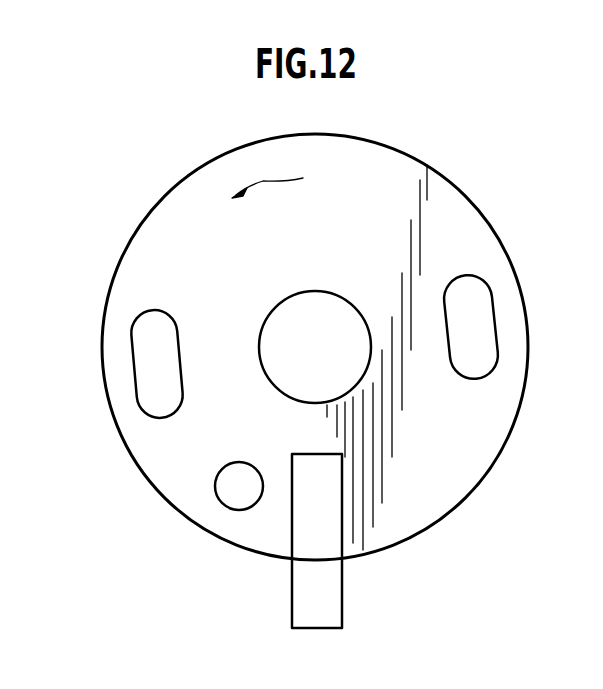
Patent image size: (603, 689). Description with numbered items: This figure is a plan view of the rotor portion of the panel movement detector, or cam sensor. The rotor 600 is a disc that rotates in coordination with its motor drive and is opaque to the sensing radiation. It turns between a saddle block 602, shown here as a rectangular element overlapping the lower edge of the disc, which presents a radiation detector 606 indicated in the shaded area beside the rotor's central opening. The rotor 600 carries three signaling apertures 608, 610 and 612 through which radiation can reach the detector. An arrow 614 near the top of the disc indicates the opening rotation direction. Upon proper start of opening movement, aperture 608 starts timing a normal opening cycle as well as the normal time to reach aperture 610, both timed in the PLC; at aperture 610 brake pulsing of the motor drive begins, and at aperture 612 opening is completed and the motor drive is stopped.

The rotor 600 is at (400, 168).
The saddle block 602 is at (330, 612).
The radiation detector 606 is at (325, 497).
The signaling aperture 608 is at (494, 329).
The signaling aperture 610 is at (258, 472).
The signaling aperture 612 is at (140, 337).
The arrow 614 is at (263, 181).